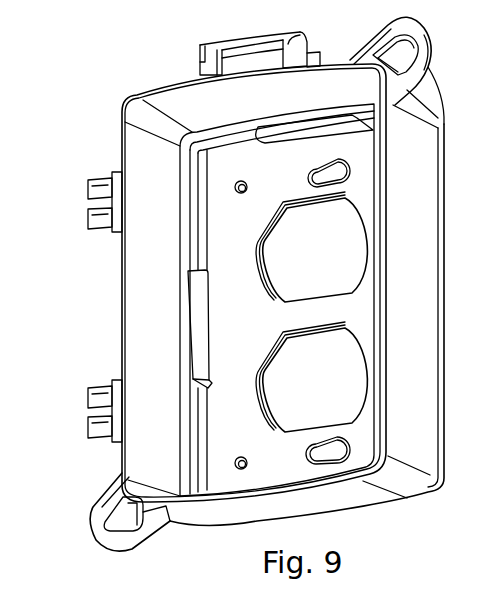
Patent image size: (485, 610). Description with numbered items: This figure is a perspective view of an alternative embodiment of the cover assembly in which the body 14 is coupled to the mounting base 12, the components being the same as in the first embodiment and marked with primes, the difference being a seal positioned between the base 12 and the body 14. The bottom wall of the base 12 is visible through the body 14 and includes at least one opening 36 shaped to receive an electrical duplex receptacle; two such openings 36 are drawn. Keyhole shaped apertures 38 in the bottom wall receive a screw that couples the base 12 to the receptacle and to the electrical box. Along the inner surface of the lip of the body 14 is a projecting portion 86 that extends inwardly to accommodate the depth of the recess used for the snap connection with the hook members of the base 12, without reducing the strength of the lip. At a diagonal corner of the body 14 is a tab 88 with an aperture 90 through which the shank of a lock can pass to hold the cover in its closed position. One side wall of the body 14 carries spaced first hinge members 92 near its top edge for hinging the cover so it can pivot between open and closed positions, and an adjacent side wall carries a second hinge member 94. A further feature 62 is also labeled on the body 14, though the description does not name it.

The mounting base 12 is at (223, 286).
The body 14 is at (248, 525).
The opening 36 is at (295, 235).
The keyhole shaped apertures 38 is at (327, 168).
The rim flange 62 is at (327, 488).
The projecting portion 86 is at (208, 300).
The tab 88 is at (142, 525).
The aperture 90 is at (120, 520).
The first hinge members 92 is at (90, 383).
The second hinge member 94 is at (199, 48).